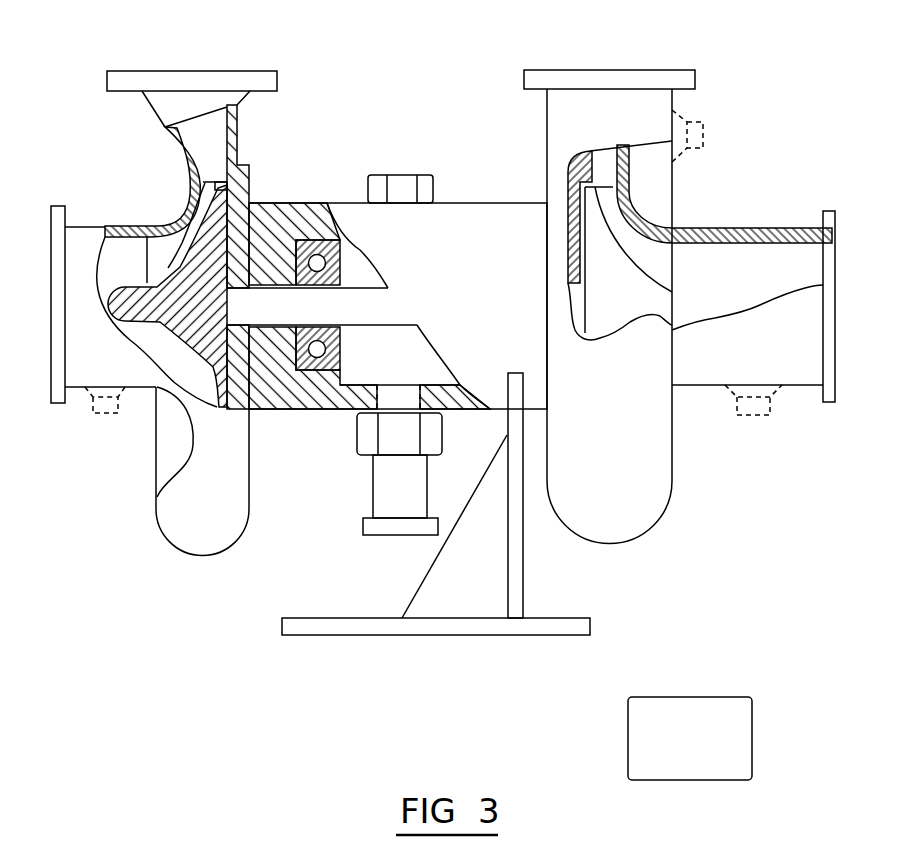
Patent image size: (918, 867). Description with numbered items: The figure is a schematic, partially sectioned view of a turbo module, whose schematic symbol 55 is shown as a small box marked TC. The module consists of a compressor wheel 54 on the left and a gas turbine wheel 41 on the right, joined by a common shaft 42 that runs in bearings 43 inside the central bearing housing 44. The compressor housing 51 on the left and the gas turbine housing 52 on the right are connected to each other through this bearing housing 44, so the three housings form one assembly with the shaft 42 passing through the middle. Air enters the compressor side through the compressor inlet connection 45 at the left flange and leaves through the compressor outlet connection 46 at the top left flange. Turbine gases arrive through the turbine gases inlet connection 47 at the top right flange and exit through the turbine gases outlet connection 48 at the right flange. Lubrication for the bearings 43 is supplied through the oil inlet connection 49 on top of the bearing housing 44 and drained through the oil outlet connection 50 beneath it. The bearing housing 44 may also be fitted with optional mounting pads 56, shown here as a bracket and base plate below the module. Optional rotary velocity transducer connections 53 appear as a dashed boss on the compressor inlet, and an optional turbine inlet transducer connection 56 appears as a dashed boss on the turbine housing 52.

The gas turbine wheel 41 is at (687, 291).
The common shaft 42 is at (377, 305).
The bearings 43 is at (295, 238).
The bearing housing 44 is at (325, 405).
The compressor inlet connection 45 is at (55, 293).
The compressor outlet connection 46 is at (238, 70).
The turbine gases inlet connection 47 is at (623, 70).
The turbine gases outlet connection 48 is at (835, 363).
The oil inlet connection 49 is at (405, 175).
The oil outlet connection 50 is at (380, 538).
The housing 51 is at (180, 523).
The gas turbine housing 52 is at (664, 510).
The rotary velocity transducer connection 53 is at (112, 415).
The compressor wheel 54 is at (177, 262).
The turbo module schematic symbol 55 is at (738, 738).
The mounting pads / turbine inlet transducer connection 56 is at (480, 598).